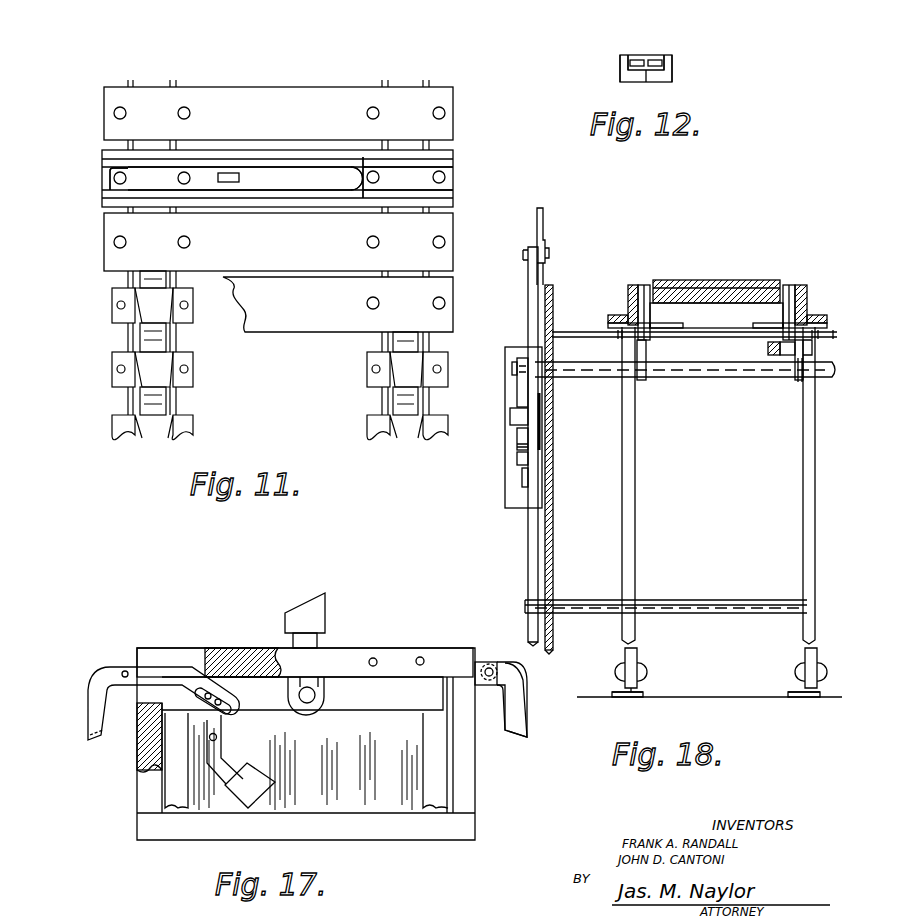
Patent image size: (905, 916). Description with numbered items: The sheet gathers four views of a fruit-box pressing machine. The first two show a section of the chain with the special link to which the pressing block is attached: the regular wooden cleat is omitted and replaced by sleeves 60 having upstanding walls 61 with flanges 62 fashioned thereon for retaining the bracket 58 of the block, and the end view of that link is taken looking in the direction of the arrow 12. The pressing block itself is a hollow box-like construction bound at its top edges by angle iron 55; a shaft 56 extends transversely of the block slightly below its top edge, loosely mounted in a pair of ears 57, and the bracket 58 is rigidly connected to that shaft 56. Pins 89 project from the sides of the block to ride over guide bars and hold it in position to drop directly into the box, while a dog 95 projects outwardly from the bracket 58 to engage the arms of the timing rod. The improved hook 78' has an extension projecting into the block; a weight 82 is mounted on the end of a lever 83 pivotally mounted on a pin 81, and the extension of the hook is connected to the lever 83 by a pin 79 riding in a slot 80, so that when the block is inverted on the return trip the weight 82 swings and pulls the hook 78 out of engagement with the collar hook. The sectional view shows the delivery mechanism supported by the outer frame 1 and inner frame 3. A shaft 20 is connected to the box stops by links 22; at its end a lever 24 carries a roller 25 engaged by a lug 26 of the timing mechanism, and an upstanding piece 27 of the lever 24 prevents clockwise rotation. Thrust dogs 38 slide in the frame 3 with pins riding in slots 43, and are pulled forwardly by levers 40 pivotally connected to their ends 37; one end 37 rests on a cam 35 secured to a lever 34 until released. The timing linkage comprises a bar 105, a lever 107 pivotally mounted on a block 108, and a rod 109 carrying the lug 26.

In FIG. 18, the outer frame 1 is at (555, 290).
In FIG. 18, the inner frame 3 is at (626, 287).
In FIG. 11, the frame posts 12 is at (90, 179).
In FIG. 18, the shaft 20 is at (718, 378).
In FIG. 18, the link 22 is at (647, 352).
In FIG. 18, the lever 24 is at (520, 420).
In FIG. 18, the roller 25 is at (520, 445).
In FIG. 18, the lug 26 is at (520, 462).
In FIG. 18, the upstanding piece 27 is at (518, 385).
In FIG. 18, the lever 34 is at (766, 349).
In FIG. 18, the cam 35 is at (792, 376).
In FIG. 18, the end 37 is at (806, 344).
In FIG. 18, the thrust dogs 38 is at (643, 285).
In FIG. 18, the levers 40 is at (636, 488).
In FIG. 18, the slots 43 is at (622, 316).
In FIG. 17, the angle iron 55 is at (435, 652).
In FIG. 17, the shaft 56 is at (304, 713).
In FIG. 17, the ears 57 is at (322, 692).
In FIG. 17, the bracket 58 is at (318, 640).
In FIG. 11, the sleeves 60 is at (458, 184).
In FIG. 12, the sleeves 60 is at (684, 77).
In FIG. 11, the upstanding walls 61 is at (414, 170).
In FIG. 12, the upstanding walls 61 is at (672, 60).
In FIG. 11, the flanges 62 is at (325, 192).
In FIG. 12, the flanges 62 is at (654, 58).
In FIG. 18, the hook 78 is at (528, 700).
In FIG. 17, the hook 78 is at (517, 699).
In FIG. 17, the hook 78' is at (144, 703).
In FIG. 17, the pin 79 is at (222, 697).
In FIG. 17, the slot 80 is at (228, 708).
In FIG. 17, the pin 81 is at (217, 738).
In FIG. 17, the weight 82 is at (243, 796).
In FIG. 17, the lever 83 is at (228, 775).
In FIG. 17, the pins 89 is at (376, 666).
In FIG. 17, the dog 95 is at (306, 608).
In FIG. 18, the bar 105 is at (543, 218).
In FIG. 18, the lever 107 is at (530, 525).
In FIG. 18, the block 108 is at (645, 690).
In FIG. 18, the rod 109 is at (524, 478).